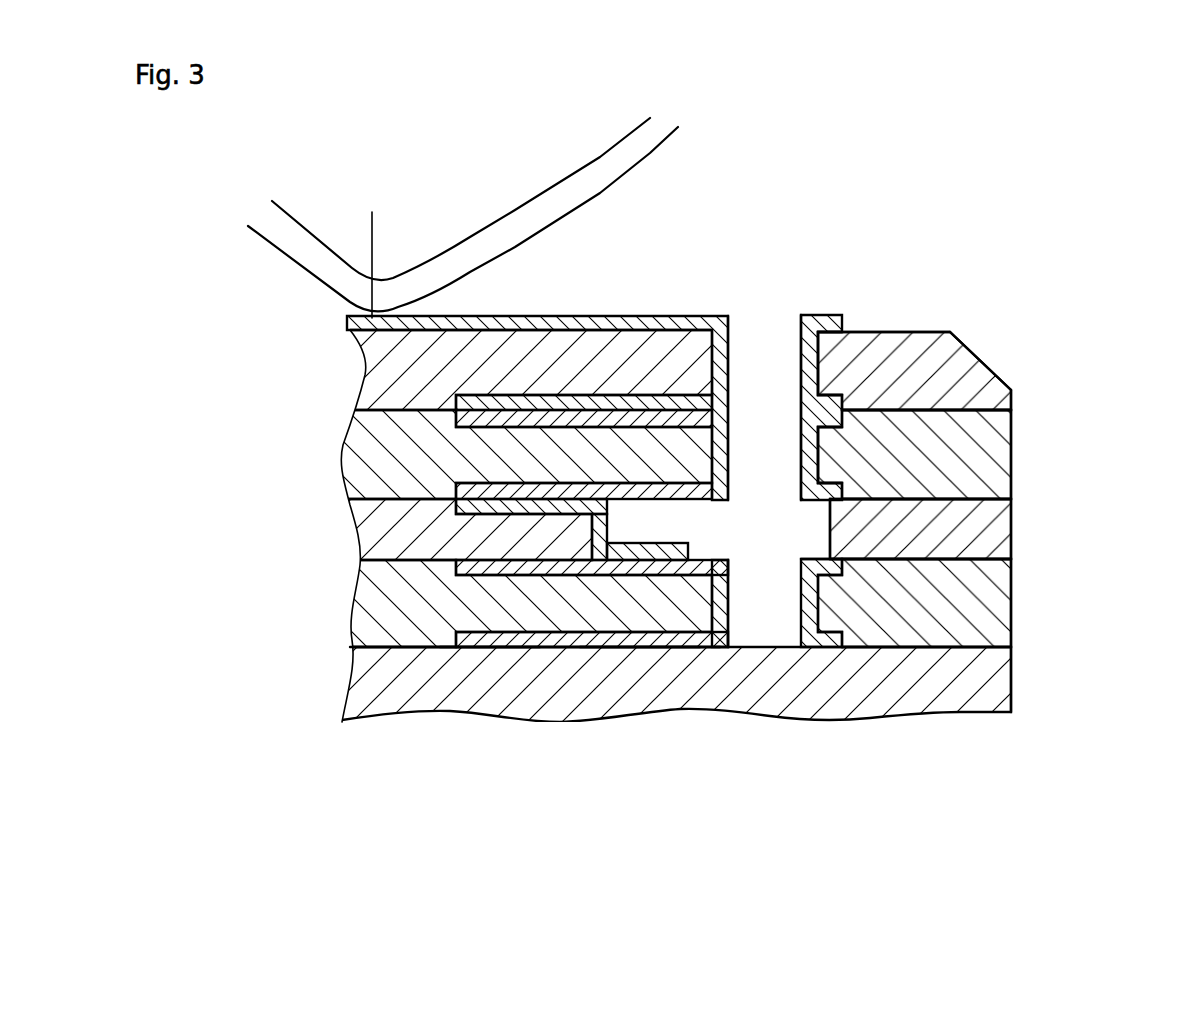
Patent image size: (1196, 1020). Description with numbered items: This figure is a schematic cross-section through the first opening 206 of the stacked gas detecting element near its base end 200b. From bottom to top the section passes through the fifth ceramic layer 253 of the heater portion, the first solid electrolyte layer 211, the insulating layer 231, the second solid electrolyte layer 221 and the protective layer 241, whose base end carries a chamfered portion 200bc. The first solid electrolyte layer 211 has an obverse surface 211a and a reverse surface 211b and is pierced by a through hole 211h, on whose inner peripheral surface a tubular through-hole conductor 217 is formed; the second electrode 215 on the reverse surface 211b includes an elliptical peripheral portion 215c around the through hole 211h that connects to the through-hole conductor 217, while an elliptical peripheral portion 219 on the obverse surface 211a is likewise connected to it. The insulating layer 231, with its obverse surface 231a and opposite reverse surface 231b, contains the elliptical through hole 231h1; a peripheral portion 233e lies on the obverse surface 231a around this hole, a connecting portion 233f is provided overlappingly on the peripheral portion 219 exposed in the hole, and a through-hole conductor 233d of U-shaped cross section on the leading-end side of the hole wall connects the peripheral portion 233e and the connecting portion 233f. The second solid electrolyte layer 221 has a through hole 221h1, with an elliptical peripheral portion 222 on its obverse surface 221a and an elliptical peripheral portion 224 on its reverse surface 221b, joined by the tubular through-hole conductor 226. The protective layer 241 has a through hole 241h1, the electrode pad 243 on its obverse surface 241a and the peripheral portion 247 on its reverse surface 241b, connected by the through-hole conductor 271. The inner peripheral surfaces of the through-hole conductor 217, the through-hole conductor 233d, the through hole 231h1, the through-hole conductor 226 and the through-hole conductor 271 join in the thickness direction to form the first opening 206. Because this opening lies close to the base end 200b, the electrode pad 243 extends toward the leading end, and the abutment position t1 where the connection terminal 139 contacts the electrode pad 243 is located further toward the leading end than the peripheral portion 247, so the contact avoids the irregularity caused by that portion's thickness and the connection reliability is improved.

The connection terminal 139 is at (552, 213).
The abutment position t1 is at (372, 251).
The electrode pad 243 is at (643, 320).
The first peripheral portion 247 is at (488, 395).
The second peripheral portion 222 is at (513, 428).
The peripheral portion 224 is at (572, 482).
The protective layer 241 is at (953, 368).
The obverse surface of protective layer 241a is at (945, 332).
The reverse surface of protective layer 241b is at (948, 412).
The first through hole 241h1 is at (822, 352).
The chamfered portion 200bc is at (967, 345).
The base end 200b is at (1013, 452).
The second solid electrolyte layer 221 is at (998, 470).
The obverse surface of second solid electrolyte layer 221a is at (978, 407).
The reverse surface of second solid electrolyte layer 221b is at (953, 502).
The second through hole 221h1 is at (815, 450).
The insulating layer 231 is at (988, 528).
The obverse surface of insulating layer 231a is at (998, 499).
The lower surface of piezoelectric layer 231 231b is at (987, 562).
The through hole 231h1 is at (830, 538).
The first solid electrolyte layer 211 is at (983, 602).
The obverse surface of first solid electrolyte layer 211a is at (965, 560).
The reverse surface of first solid electrolyte layer 211b is at (968, 650).
The through hole 211h is at (812, 612).
The through-hole conductor 233d is at (598, 532).
The peripheral portion 233e is at (498, 512).
The connecting portion 233f is at (660, 556).
The through-hole conductor 226 is at (800, 362).
The through-hole conductor 271 is at (733, 340).
The first opening 206 is at (759, 310).
The through-hole conductor 217 is at (735, 593).
The second electrode 215 is at (492, 636).
The peripheral portion 215c is at (490, 728).
The peripheral portion 219 is at (612, 557).
The fifth ceramic layer 253 is at (983, 692).